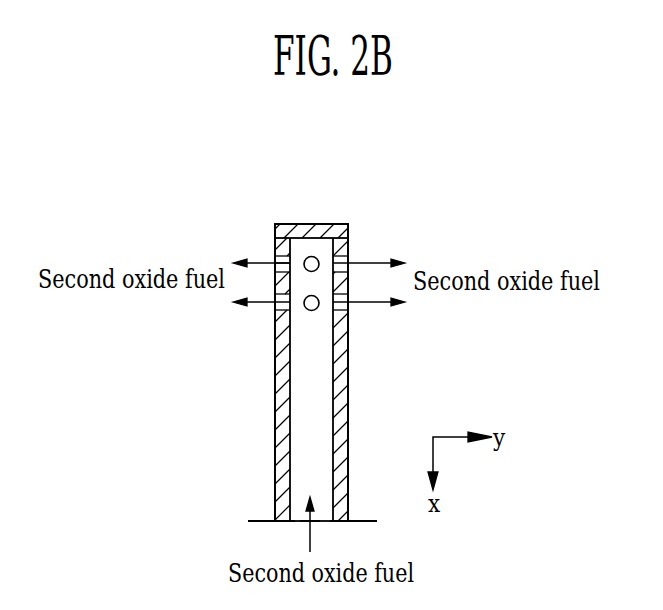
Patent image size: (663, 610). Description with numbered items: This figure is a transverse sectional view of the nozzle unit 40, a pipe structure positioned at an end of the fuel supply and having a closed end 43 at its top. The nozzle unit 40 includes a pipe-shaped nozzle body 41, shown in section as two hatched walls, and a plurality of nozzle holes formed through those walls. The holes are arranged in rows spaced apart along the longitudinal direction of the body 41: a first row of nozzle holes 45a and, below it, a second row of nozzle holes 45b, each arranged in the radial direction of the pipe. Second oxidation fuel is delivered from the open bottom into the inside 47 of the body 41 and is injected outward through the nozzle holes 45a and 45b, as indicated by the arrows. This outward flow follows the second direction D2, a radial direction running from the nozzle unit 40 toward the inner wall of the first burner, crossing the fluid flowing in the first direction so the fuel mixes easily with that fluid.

The nozzle unit 40 is at (234, 176).
The nozzle body 41 is at (282, 438).
The closed end 43 is at (312, 224).
The first row of nozzle holes 45a is at (343, 260).
The second row of nozzle holes 45b is at (343, 305).
The inside of the body 47 is at (298, 380).
The second direction D2 is at (270, 262).